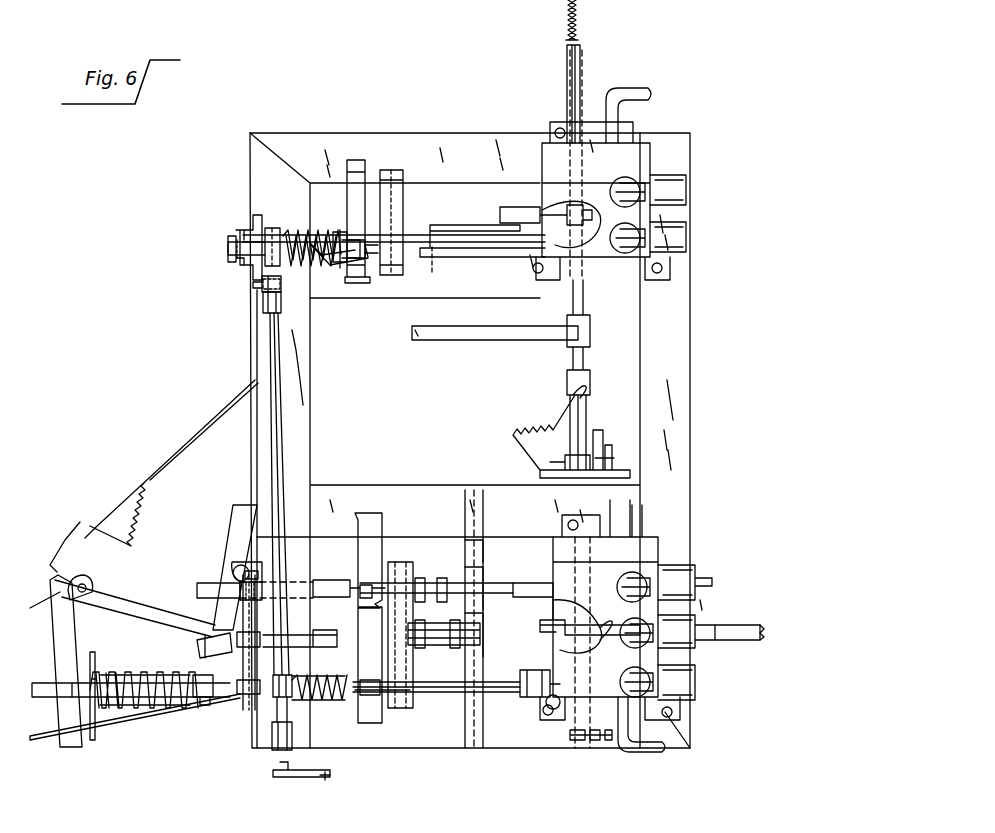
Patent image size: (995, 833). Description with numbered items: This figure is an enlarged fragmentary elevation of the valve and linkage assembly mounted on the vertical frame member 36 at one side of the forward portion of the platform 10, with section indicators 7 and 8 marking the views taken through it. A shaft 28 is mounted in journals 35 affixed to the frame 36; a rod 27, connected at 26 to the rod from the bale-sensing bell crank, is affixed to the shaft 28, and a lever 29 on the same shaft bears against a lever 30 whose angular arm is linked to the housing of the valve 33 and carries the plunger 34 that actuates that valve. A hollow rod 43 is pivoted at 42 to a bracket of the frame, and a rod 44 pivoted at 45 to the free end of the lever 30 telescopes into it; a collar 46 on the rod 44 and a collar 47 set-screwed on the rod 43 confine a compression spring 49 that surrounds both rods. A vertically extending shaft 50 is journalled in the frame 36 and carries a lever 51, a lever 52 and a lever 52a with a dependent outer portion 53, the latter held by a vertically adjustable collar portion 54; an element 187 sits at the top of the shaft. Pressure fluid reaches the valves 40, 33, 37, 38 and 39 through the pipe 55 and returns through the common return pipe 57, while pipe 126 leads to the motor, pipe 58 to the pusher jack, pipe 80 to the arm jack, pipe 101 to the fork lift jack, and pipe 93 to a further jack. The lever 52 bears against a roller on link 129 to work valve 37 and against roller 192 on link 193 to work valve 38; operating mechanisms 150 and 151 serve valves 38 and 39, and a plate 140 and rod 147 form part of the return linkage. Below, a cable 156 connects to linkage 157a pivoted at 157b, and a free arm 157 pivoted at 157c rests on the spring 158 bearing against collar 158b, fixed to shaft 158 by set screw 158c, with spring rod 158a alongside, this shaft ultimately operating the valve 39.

The spring 187 is at (578, 24).
The vertically extending shaft 50 is at (578, 72).
The pipe 55 is at (650, 86).
The section line 7- 7 is at (238, 126).
The section line 8- 8 is at (202, 400).
The platform 10 is at (206, 568).
The vertically adjustable collar portion 54 is at (583, 212).
The pipe 126 is at (633, 197).
The valve 40 is at (698, 194).
The pipe 58 is at (645, 237).
The valve 33 is at (700, 242).
The plunger 34 is at (533, 243).
The laterally extending lever 52a is at (470, 234).
The dependent outer portion 53 is at (432, 232).
The lever 30 is at (476, 250).
The pivot 45 is at (348, 237).
The collar 46 is at (341, 230).
The compression spring 49 is at (297, 243).
The rod 44 is at (338, 238).
The collar 47 is at (275, 229).
The hollow rod 43 is at (262, 238).
The pivot 42 is at (229, 242).
The journals 35 is at (263, 310).
The lever 29 is at (327, 270).
The laterally extending lever 51 is at (474, 341).
The vertical frame member 36 is at (305, 427).
The shaft 28 is at (285, 475).
The pivot 157b is at (243, 578).
The pivot 157c is at (84, 590).
The linkage 157a is at (124, 594).
The rod 147 is at (197, 596).
The cable 156 is at (38, 608).
The free arm 157 is at (82, 637).
The shaft 158 is at (120, 702).
The spring rod 158a is at (145, 704).
The collar 158b is at (210, 704).
The set screw 158c is at (208, 706).
The rod 27 is at (310, 770).
The connection 26 is at (329, 776).
The plate 140 is at (405, 672).
The link 129 is at (500, 594).
The operating mechanism 150 is at (494, 648).
The link 193 is at (508, 638).
The operating mechanism 151 is at (500, 706).
The laterally extending lever 52 is at (537, 600).
The roller 192 is at (574, 637).
The pipe 80 is at (638, 577).
The pipe 101 is at (650, 633).
The pipe 93 is at (660, 680).
The valve 37 is at (670, 574).
The valve 38 is at (686, 644).
The valve 39 is at (702, 697).
The common return pipe 57 is at (660, 754).